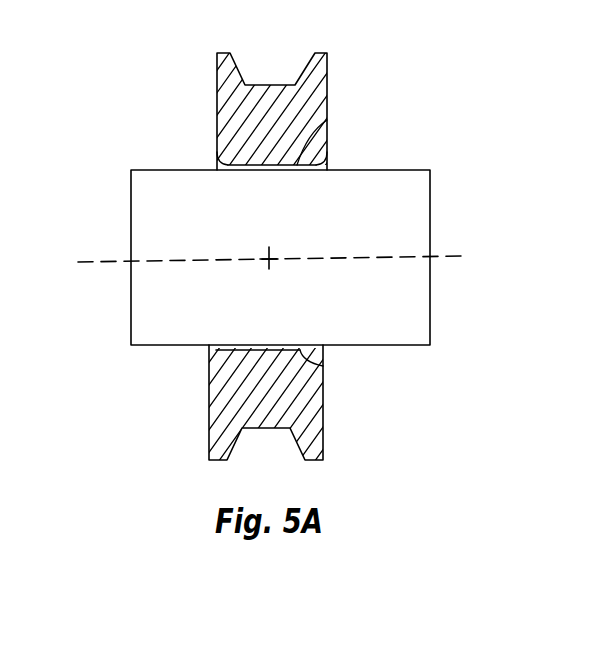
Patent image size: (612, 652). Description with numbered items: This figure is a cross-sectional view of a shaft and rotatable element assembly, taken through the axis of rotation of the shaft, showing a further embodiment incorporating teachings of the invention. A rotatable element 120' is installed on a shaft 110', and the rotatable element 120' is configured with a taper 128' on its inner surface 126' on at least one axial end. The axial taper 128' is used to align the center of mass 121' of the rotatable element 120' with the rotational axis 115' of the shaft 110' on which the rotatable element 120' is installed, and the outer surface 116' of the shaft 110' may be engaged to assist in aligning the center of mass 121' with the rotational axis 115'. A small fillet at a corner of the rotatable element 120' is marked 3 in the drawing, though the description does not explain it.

The shaft 110' is at (279, 241).
The rotational axis 115' is at (291, 231).
The outer surface 116' is at (312, 275).
The rotatable element 120' is at (268, 241).
The center of mass 121' is at (296, 283).
The inner surface 126' is at (341, 122).
The taper 128' is at (290, 124).
The corner fillet 3 is at (323, 366).